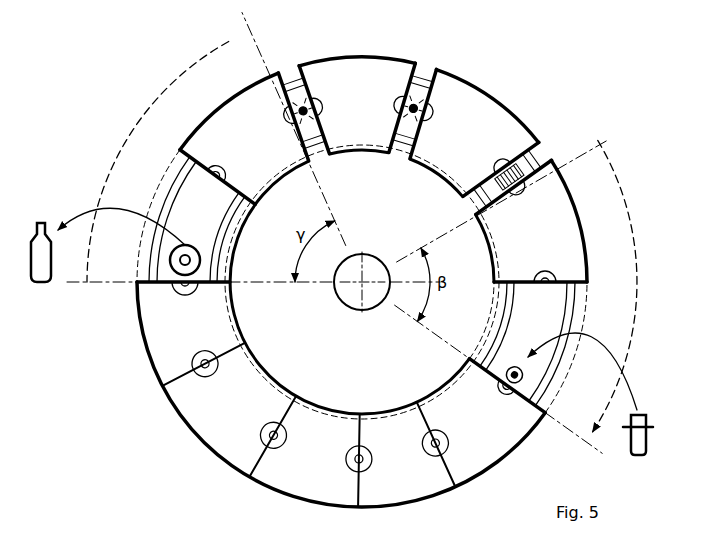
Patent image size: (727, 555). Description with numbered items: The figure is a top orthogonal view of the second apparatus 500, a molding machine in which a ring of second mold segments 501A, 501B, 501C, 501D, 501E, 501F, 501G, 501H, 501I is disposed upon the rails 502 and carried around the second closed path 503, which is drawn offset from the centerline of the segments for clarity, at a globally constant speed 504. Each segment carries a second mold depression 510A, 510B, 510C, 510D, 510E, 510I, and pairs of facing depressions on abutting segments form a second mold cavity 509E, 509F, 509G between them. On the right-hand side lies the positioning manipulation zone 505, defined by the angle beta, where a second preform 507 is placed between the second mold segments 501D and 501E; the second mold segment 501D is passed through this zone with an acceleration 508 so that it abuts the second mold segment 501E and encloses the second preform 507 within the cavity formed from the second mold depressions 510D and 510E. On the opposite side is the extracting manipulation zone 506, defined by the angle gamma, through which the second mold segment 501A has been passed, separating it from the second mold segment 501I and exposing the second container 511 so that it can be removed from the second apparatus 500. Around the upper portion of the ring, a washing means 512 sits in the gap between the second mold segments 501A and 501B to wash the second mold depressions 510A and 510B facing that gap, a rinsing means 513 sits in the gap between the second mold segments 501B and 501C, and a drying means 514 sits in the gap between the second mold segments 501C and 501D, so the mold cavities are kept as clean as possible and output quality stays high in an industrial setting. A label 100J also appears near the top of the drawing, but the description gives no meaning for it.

The second apparatus 500 is at (605, 75).
The second mold segment 501A is at (185, 140).
The second mold segment 501B is at (375, 60).
The second mold segment 501C is at (485, 108).
The second mold segment 501D is at (585, 248).
The second mold segment 501E is at (504, 452).
The second mold segment 501F is at (406, 500).
The second mold segment 501G is at (283, 492).
The second mold segment 501H is at (188, 424).
The second mold segment 501I is at (145, 350).
The rails 502 is at (573, 332).
The second closed path 503 is at (388, 412).
The globally constant speed 504 is at (380, 257).
The positioning manipulation zone 505 is at (596, 448).
The extracting manipulation zone 506 is at (243, 18).
The second preform 507 is at (650, 416).
The acceleration 508 is at (628, 207).
The second mold cavity 509E is at (450, 470).
The second mold cavity 509F is at (352, 488).
The second mold cavity 509G is at (258, 454).
The second mold depression 510A is at (242, 42).
The second mold depression 510B is at (328, 102).
The second mold depression 510C is at (447, 104).
The second mold depression 510D is at (560, 278).
The second mold depression 510E is at (517, 386).
The second mold depression 510I is at (172, 292).
The second container 511 is at (40, 284).
The washing means 512 is at (297, 102).
The rinsing means 513 is at (427, 104).
The drying means 514 is at (530, 158).
The sample container 100J is at (327, 6).